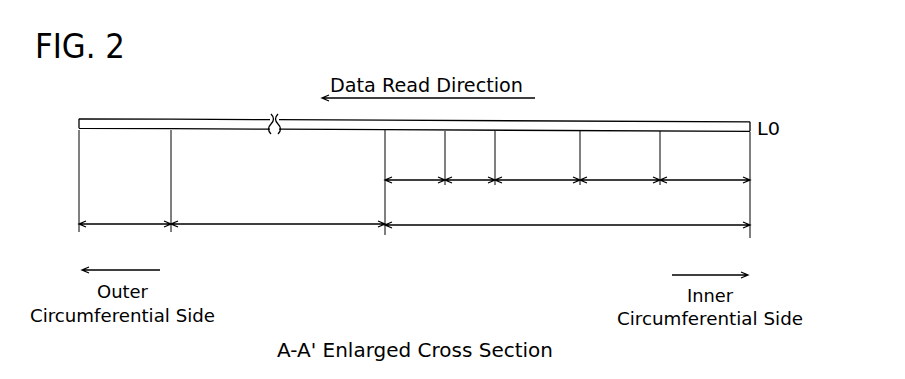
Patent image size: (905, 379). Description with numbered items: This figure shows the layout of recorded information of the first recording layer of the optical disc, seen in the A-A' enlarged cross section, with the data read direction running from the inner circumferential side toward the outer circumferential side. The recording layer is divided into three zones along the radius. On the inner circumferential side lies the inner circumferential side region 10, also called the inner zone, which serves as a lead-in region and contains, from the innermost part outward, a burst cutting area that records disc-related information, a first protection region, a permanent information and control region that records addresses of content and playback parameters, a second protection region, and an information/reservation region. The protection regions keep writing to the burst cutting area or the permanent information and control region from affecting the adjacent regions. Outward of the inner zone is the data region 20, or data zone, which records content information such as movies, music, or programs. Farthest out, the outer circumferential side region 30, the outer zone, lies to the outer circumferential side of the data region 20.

The inner circumferential side region 10 is at (567, 186).
The data region 20 is at (278, 183).
The outer circumferential side region 30 is at (125, 185).